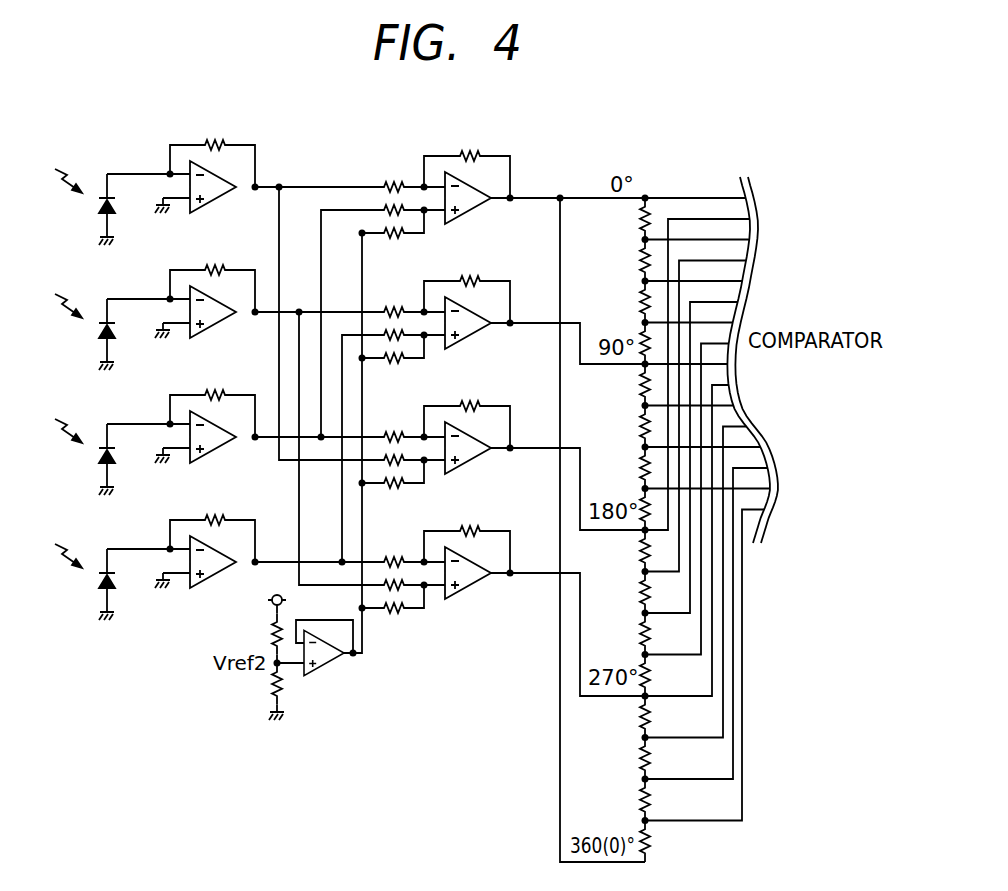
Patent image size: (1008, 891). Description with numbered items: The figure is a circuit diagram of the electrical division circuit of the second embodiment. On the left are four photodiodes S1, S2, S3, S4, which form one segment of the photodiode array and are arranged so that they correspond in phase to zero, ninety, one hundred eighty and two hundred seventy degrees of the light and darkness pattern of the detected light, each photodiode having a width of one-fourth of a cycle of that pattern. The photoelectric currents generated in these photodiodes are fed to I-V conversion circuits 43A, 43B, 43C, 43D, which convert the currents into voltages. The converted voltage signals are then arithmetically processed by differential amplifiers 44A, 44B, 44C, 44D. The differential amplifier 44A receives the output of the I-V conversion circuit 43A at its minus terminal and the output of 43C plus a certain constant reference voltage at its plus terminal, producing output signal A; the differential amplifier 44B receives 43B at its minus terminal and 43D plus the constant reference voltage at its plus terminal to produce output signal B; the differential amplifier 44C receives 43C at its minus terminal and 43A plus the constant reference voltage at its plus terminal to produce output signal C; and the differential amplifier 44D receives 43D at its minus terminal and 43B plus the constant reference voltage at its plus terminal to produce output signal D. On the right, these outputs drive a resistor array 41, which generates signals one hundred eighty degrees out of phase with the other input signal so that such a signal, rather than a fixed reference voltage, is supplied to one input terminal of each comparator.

The resistor array 41 is at (649, 191).
The I-V conversion circuit 43A is at (183, 183).
The I-V conversion circuit 43B is at (183, 308).
The I-V conversion circuit 43C is at (183, 433).
The I-V conversion circuit 43D is at (183, 558).
The differential amplifier 44A is at (449, 194).
The differential amplifier 44B is at (449, 319).
The differential amplifier 44C is at (449, 444).
The differential amplifier 44D is at (449, 569).
The photodiode S1 is at (80, 207).
The photodiode S2 is at (80, 332).
The photodiode S3 is at (80, 457).
The photodiode S4 is at (80, 582).